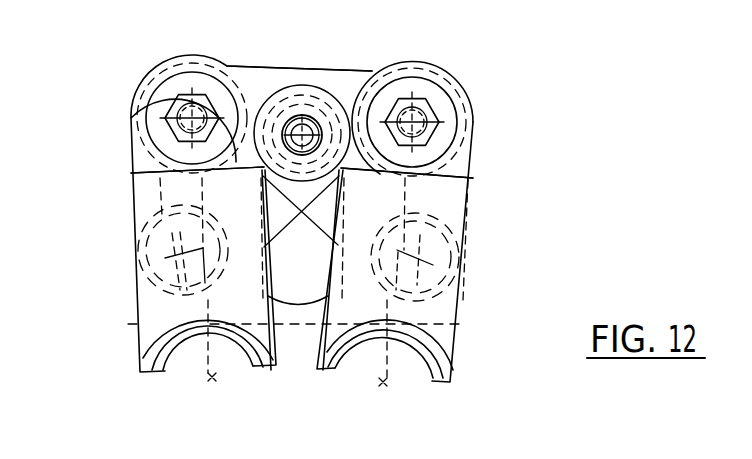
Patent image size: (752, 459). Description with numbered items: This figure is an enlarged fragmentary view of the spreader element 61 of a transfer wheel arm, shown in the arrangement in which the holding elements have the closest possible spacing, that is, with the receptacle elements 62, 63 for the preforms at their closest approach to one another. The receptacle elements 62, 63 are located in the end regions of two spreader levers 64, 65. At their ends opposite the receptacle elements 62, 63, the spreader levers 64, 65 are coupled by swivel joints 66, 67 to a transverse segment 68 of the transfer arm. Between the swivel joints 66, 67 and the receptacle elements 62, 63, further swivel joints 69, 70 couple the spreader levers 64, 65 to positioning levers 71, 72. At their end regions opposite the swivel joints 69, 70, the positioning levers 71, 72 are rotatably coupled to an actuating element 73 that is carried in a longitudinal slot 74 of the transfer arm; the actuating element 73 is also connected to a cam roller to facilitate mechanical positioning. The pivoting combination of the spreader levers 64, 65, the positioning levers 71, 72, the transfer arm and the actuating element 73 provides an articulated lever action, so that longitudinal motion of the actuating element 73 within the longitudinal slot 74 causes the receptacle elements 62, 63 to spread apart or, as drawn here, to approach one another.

The spreader element 61 is at (496, 215).
The receptacle element 62 is at (237, 347).
The receptacle element 63 is at (415, 345).
The spreader lever 64 is at (138, 320).
The spreader lever 65 is at (453, 338).
The swivel joint 66 is at (163, 111).
The swivel joint 67 is at (450, 111).
The transverse segment 68 is at (288, 65).
The swivel joint 69 is at (160, 259).
The swivel joint 70 is at (447, 260).
The positioning lever 71 is at (220, 196).
The positioning lever 72 is at (387, 202).
The actuating element 73 is at (320, 97).
The longitudinal slot 74 is at (299, 304).